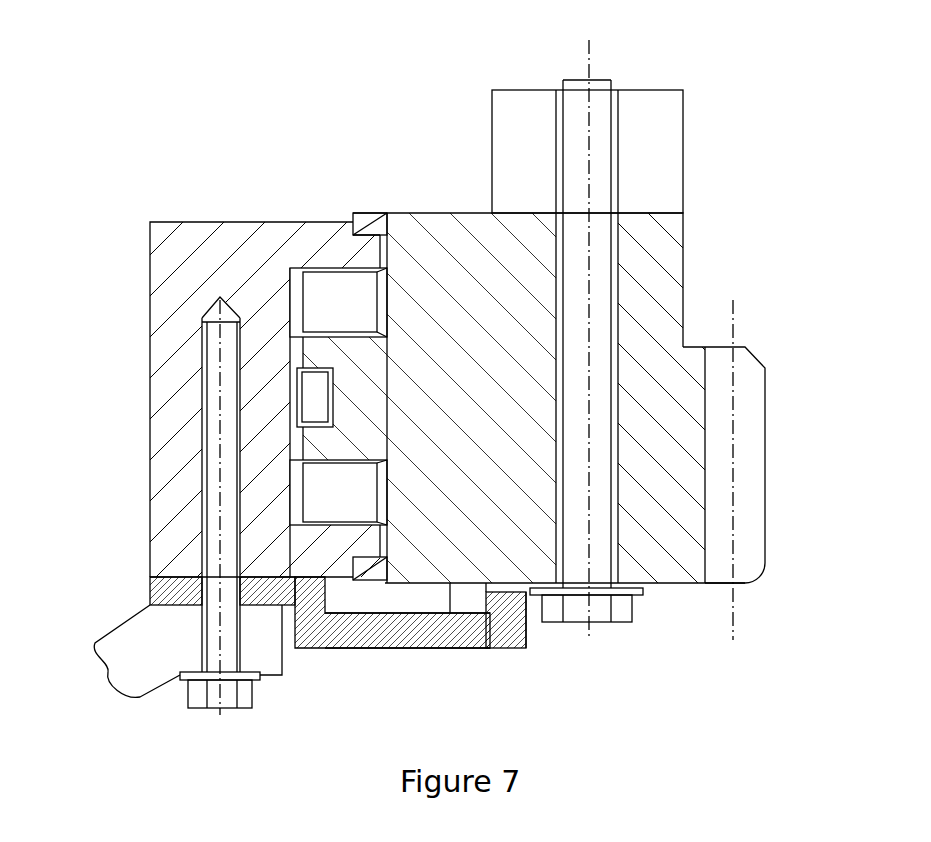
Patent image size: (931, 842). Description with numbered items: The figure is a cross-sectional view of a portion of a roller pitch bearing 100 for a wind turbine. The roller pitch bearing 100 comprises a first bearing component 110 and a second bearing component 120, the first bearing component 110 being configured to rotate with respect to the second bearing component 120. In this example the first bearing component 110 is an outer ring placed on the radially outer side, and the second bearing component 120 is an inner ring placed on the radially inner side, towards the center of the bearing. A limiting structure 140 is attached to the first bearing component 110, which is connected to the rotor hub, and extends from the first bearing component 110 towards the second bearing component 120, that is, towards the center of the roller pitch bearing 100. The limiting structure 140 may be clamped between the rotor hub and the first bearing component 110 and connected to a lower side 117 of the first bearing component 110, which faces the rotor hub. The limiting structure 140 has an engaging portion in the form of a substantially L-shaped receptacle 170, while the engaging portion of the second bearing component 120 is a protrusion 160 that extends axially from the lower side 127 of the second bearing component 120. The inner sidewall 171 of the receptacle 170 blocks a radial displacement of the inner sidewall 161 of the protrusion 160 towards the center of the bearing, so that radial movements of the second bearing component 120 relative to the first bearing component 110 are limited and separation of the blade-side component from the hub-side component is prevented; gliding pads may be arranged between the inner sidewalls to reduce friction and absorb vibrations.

The roller pitch bearing 100 is at (441, 395).
The first bearing component 110 is at (180, 272).
The lower side of the first bearing component 117 is at (177, 577).
The second bearing component 120 is at (455, 232).
The lower side of the second bearing component 127 is at (673, 583).
The limiting structure 140 is at (317, 648).
The protrusion 160 is at (412, 600).
The inner sidewall of the protrusion 161 is at (497, 615).
The receptacle 170 is at (520, 648).
The inner sidewall of the receptacle 171 is at (517, 610).